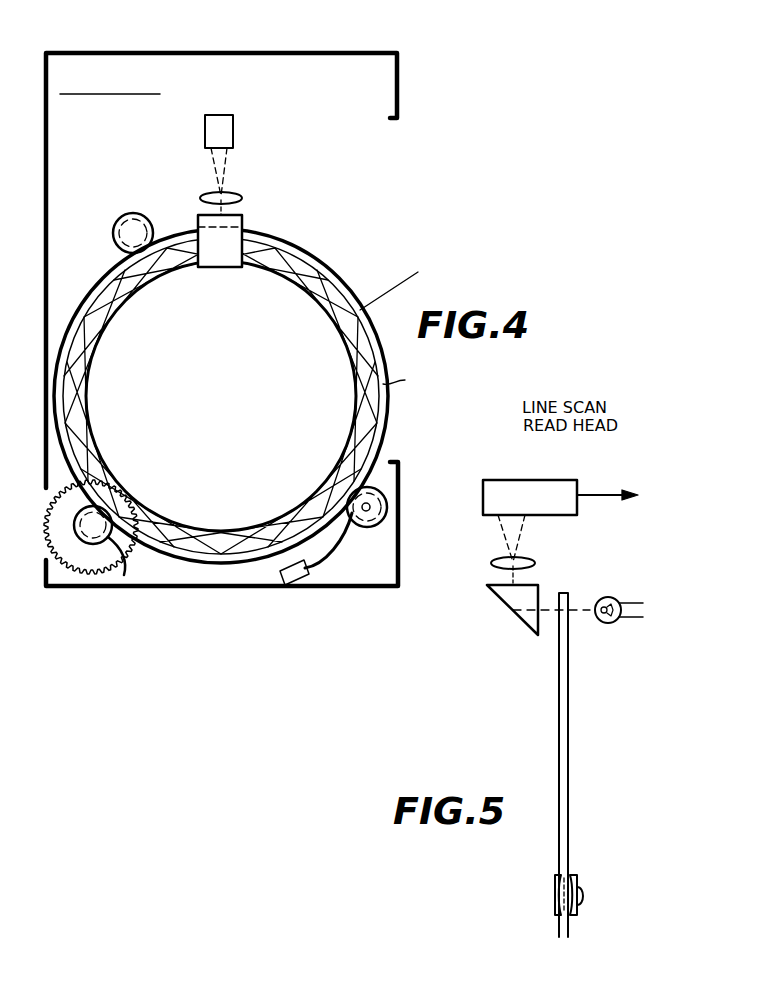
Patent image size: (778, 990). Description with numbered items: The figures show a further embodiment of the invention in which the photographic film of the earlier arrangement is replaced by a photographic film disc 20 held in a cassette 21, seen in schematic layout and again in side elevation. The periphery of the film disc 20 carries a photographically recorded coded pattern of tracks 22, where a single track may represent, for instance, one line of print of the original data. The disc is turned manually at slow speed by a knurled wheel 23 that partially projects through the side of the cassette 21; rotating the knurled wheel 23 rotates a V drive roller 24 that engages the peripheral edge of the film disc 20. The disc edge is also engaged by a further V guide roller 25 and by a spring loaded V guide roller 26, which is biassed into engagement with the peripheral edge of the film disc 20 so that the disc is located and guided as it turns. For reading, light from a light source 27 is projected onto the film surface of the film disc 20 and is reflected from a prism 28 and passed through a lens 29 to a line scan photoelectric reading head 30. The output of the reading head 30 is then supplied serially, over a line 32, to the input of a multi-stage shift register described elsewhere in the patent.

In FIG. 4, the photographic film disc 20 is at (347, 273).
In FIG. 5, the photographic film disc 20 is at (570, 800).
In FIG. 4, the cassette 21 is at (46, 72).
In FIG. 4, the tracks 22 is at (383, 428).
In FIG. 4, the knurled wheel 23 is at (80, 576).
In FIG. 4, the V drive roller 24 is at (122, 576).
In FIG. 5, the V drive roller 24 is at (555, 890).
In FIG. 4, the V guide roller 25 is at (114, 240).
In FIG. 4, the spring loaded V guide roller 26 is at (370, 526).
In FIG. 5, the light source 27 is at (611, 623).
In FIG. 4, the prism 28 is at (225, 237).
In FIG. 5, the prism 28 is at (518, 612).
In FIG. 4, the lens 29 is at (232, 192).
In FIG. 5, the lens 29 is at (527, 560).
In FIG. 4, the line scan photoelectric reading head 30 is at (233, 130).
In FIG. 5, the line scan photoelectric reading head 30 is at (520, 490).
In FIG. 5, the line 32 is at (602, 494).